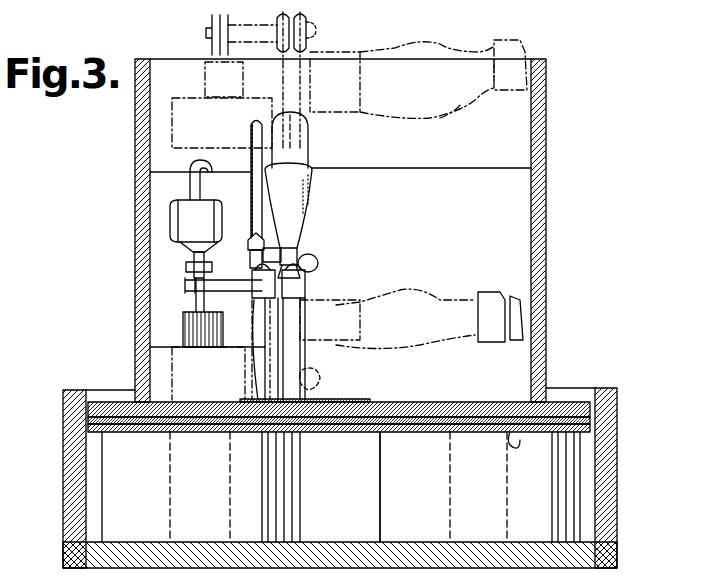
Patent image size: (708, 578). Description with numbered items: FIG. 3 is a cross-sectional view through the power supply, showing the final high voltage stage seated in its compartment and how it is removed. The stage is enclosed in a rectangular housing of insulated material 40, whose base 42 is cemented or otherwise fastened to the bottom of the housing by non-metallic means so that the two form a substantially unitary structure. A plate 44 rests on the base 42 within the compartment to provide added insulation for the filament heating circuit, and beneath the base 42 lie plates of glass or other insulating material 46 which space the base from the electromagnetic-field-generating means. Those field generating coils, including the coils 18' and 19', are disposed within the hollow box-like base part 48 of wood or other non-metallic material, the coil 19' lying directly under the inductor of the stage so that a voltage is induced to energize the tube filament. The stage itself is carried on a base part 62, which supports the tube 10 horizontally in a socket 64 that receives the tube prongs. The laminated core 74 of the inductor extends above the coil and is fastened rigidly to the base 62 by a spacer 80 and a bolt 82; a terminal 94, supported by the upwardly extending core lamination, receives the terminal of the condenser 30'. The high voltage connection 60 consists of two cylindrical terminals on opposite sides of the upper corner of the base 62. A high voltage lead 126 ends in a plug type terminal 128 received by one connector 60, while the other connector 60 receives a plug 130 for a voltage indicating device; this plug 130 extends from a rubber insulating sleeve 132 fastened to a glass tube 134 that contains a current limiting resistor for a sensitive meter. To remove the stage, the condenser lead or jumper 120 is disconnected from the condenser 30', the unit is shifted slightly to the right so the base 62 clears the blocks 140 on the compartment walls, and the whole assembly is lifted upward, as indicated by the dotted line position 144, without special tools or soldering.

The tube 10 is at (432, 46).
The field generating coil 18' is at (407, 487).
The field generating coil 19' is at (188, 296).
The condenser 30' is at (196, 212).
The housing of insulated material 40 is at (549, 247).
The base of the housing 42 is at (490, 402).
The plate 44 is at (372, 400).
The insulating plate 46 is at (523, 447).
The base part 48 is at (619, 495).
The high voltage connection 60 is at (318, 26).
The base part 62 is at (283, 76).
The socket 64 is at (312, 76).
The core 74 is at (205, 78).
The spacer 80 is at (247, 280).
The bolt 82 is at (318, 38).
The terminal 94 is at (194, 272).
The condenser lead or jumper 120 is at (200, 172).
The high voltage lead 126 is at (250, 176).
The plug type terminal 128 is at (258, 238).
The plug 130 is at (297, 266).
The rubber insulating sleeve 132 is at (302, 216).
The glass tube 134 is at (296, 160).
The block 140 is at (282, 254).
The dotted line position 144 is at (460, 122).